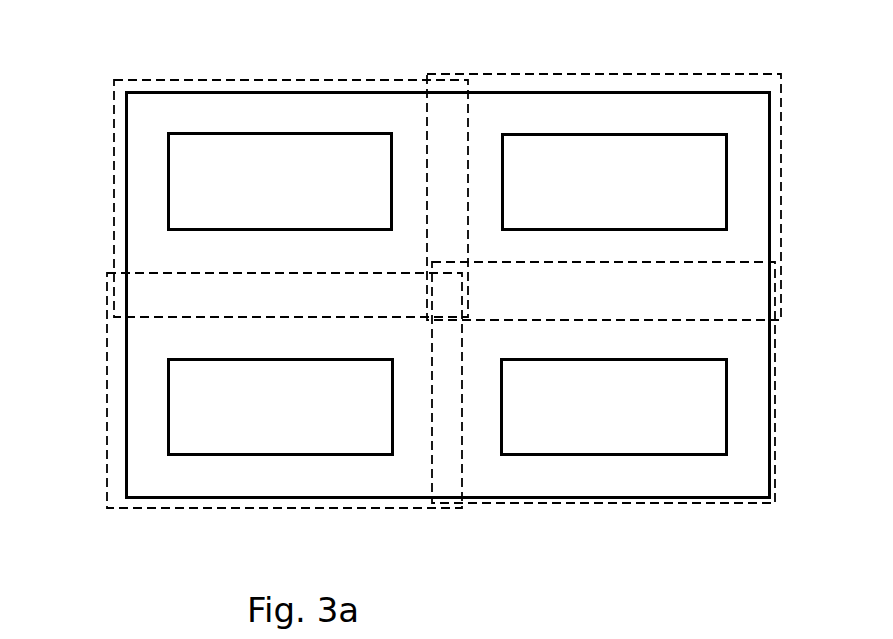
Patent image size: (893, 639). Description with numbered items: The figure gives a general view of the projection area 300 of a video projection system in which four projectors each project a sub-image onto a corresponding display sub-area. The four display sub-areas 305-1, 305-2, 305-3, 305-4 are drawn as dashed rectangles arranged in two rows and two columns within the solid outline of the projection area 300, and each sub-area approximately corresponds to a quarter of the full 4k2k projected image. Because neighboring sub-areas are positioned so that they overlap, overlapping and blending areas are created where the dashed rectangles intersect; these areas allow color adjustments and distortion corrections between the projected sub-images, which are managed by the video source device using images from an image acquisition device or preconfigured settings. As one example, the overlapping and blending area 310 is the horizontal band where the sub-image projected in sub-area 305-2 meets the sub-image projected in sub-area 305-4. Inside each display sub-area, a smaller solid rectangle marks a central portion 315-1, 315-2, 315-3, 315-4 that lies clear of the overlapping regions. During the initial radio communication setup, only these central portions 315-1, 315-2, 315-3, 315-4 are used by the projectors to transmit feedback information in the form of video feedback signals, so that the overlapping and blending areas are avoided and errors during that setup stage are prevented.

The projection area 300 is at (245, 90).
The display sub-area 305-1 is at (113, 128).
The display sub-area 305-2 is at (782, 130).
The display sub-area 305-3 is at (163, 514).
The display sub-area 305-4 is at (535, 507).
The overlapping and blending area 310 is at (750, 292).
The central portion of the projection sub-area 315-1 is at (280, 182).
The central portion of the projection sub-area 315-2 is at (615, 182).
The central portion of the projection sub-area 315-3 is at (281, 407).
The central portion of the projection sub-area 315-4 is at (614, 407).